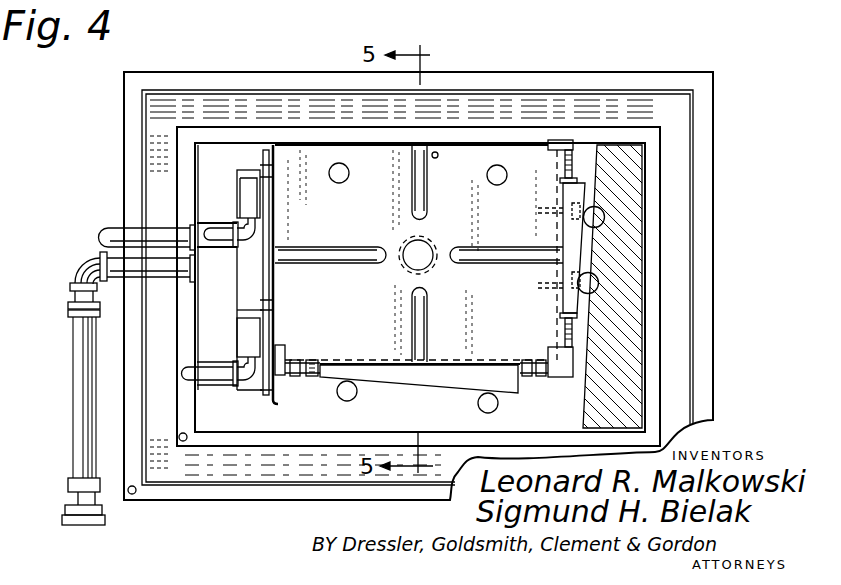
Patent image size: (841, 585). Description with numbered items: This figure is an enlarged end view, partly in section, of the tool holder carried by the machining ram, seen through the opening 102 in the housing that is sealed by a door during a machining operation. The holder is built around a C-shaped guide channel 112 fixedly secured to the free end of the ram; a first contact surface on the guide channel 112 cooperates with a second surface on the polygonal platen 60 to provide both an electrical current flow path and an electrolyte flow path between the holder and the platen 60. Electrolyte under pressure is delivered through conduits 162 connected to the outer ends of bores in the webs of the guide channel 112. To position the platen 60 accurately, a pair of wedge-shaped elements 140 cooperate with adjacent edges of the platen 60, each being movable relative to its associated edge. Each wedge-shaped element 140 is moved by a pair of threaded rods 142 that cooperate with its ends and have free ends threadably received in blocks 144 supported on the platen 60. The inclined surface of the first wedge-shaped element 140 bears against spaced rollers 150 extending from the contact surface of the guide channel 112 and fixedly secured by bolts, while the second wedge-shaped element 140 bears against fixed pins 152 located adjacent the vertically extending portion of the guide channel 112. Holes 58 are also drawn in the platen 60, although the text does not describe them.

The opening 102 is at (322, 0).
The C-shaped guide channel 112 is at (210, 152).
The conduits 162 is at (118, 263).
The holes 58 is at (339, 162).
The platen 60 is at (350, 212).
The blocks 144 is at (565, 140).
The threaded rods 142 is at (573, 163).
The wedge-shaped elements 140 is at (577, 248).
The fixed pins 152 is at (600, 217).
The rollers 150 is at (500, 406).